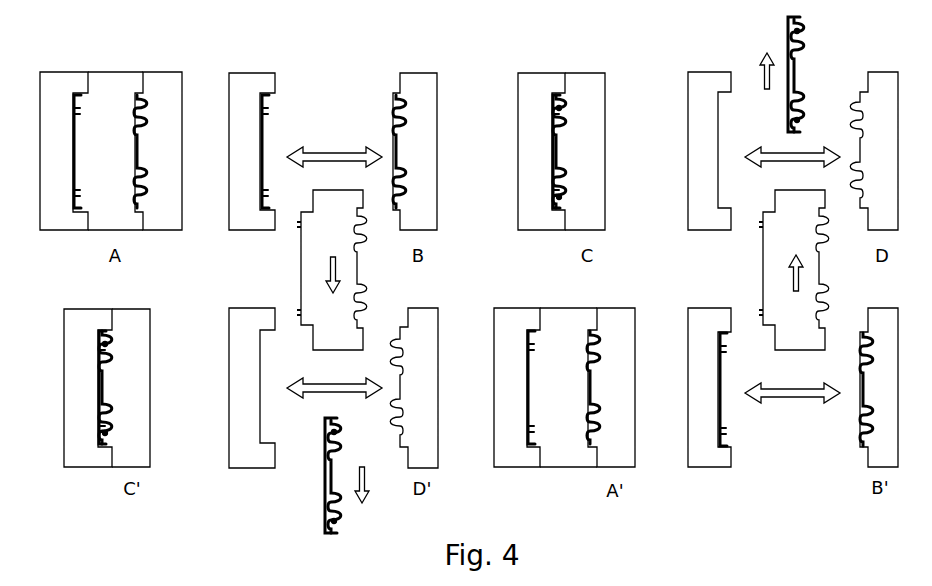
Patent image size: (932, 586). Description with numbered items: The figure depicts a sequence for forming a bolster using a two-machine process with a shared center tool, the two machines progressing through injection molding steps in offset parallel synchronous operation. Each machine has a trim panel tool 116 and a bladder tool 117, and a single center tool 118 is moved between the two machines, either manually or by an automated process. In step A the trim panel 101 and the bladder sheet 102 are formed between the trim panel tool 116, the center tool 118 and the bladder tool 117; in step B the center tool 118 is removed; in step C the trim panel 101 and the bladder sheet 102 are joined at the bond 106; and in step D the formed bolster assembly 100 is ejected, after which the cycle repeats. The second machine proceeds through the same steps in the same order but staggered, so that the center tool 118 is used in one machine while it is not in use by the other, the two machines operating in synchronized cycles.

The bolster assembly 100 is at (817, 45).
The trim panel 101 is at (264, 132).
The bladder sheet 102 is at (393, 140).
The bond 106 is at (558, 110).
The trim panel tool 116 is at (57, 82).
The bladder tool 117 is at (160, 84).
The center tool 118 is at (118, 84).